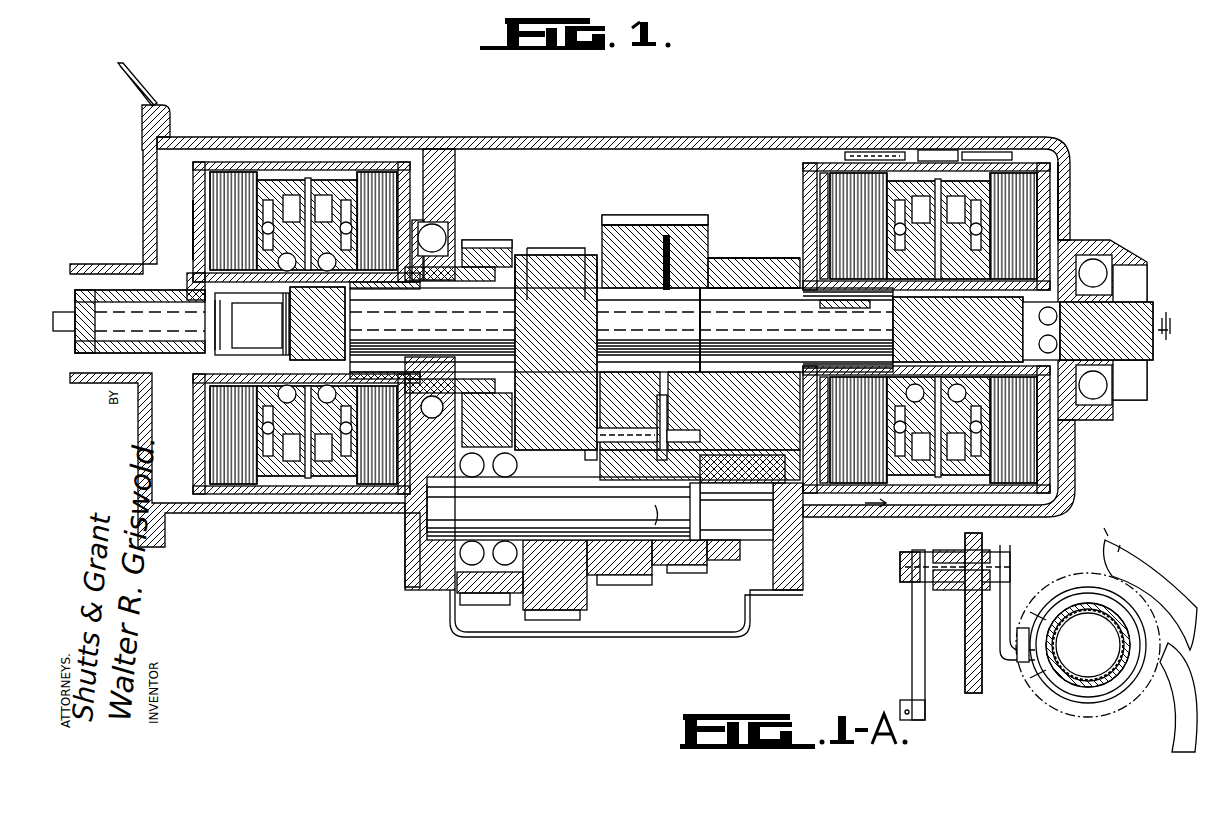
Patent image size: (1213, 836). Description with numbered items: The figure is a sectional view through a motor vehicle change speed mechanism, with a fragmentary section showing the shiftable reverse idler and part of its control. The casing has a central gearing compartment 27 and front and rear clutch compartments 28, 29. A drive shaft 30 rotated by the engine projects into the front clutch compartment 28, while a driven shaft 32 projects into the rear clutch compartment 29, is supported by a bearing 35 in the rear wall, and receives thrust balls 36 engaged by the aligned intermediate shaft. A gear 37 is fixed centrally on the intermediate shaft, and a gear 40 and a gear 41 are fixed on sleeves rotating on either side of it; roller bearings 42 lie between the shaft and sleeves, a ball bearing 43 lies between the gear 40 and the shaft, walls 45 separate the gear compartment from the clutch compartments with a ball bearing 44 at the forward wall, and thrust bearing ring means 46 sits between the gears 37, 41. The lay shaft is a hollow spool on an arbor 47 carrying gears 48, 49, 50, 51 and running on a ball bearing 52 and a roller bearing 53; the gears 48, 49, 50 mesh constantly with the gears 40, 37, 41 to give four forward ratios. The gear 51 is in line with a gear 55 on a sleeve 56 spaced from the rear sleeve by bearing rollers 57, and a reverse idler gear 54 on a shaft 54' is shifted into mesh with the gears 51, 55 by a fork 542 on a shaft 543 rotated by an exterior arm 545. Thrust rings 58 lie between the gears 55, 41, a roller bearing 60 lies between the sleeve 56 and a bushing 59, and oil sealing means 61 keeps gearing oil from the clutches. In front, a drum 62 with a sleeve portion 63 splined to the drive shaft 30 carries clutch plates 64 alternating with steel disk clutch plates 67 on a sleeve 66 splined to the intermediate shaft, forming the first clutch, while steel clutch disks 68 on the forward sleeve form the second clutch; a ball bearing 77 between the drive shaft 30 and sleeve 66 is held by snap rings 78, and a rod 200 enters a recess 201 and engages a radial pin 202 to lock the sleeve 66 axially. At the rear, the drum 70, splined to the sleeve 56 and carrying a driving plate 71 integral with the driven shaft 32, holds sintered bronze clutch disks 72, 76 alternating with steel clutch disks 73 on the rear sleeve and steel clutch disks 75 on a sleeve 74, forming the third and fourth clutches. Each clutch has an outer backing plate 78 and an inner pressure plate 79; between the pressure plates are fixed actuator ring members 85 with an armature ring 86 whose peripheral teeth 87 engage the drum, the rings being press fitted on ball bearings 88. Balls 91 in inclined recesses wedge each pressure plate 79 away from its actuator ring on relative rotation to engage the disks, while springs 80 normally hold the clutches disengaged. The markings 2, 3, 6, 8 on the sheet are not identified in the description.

In FIG. 1, the main shaft 2 is at (766, 330).
In FIG. 1, the direction arrow 3 is at (870, 503).
In FIG. 1, the clutch 6 is at (936, 185).
In FIG. 1, the clutch 8 is at (882, 180).
In FIG. 1, the central gearing compartment 27 is at (745, 148).
In FIG. 1, the front clutch compartment 28 is at (350, 140).
In FIG. 1, the rear clutch compartment 29 is at (888, 150).
In FIG. 1, the drive shaft 30 is at (95, 290).
In FIG. 1, the driven shaft 32 is at (1147, 380).
In FIG. 1, the bearing 35 is at (1080, 433).
In FIG. 1, the thrust balls 36 is at (1078, 338).
In FIG. 1, the gear 37 is at (560, 256).
In FIG. 1, the gear 40 is at (490, 250).
In FIG. 1, the gear 41 is at (635, 228).
In FIG. 1, the roller bearings 42 is at (760, 300).
In FIG. 1, the ball bearing 43 is at (533, 262).
In FIG. 1, the ball bearing 44 is at (458, 245).
In FIG. 1, the walls 45 is at (455, 162).
In FIG. 1, the thrust bearing ring means 46 is at (587, 262).
In FIG. 1, the arbor 47 is at (563, 508).
In FIG. 1, the gear 48 is at (480, 605).
In FIG. 1, the gear 49 is at (558, 620).
In FIG. 1, the gear 50 is at (630, 585).
In FIG. 1, the gear 51 is at (690, 573).
In FIG. 1-A, the gear 51 is at (1170, 735).
In FIG. 1, the ball bearing 52 is at (430, 590).
In FIG. 1, the roller bearing 53 is at (650, 530).
In FIG. 1, the reverse idler gear 54 is at (750, 522).
In FIG. 1-A, the reverse idler gear 54 is at (1082, 660).
In FIG. 1-A, the shaft 54' is at (1051, 663).
In FIG. 1-A, the fork 542 is at (1012, 580).
In FIG. 1-A, the shaft 543 is at (905, 567).
In FIG. 1-A, the arm 545 is at (912, 640).
In FIG. 1, the gear 55 is at (670, 240).
In FIG. 1-A, the gear 55 is at (1148, 560).
In FIG. 1, the sleeve 56 is at (842, 309).
In FIG. 1, the bearing rollers 57 is at (712, 330).
In FIG. 1, the thrust rings 58 is at (666, 235).
In FIG. 1, the bushing 59 is at (732, 260).
In FIG. 1, the roller bearing 60 is at (714, 260).
In FIG. 1, the oil sealing means 61 is at (1070, 250).
In FIG. 1, the drum 62 is at (312, 182).
In FIG. 1, the sleeve portion 63 is at (190, 283).
In FIG. 1, the clutch plates 64 is at (266, 172).
In FIG. 1, the sleeve 66 is at (195, 440).
In FIG. 1, the steel disk clutch plates 67 is at (226, 175).
In FIG. 1, the steel clutch disks 68 is at (385, 175).
In FIG. 1, the rear clutch drum 70 is at (795, 122).
In FIG. 1, the driving plate 71 is at (1070, 190).
In FIG. 1, the sintered bronze clutch disks 72 is at (836, 170).
In FIG. 1, the steel clutch disks 73 is at (878, 336).
In FIG. 1, the sleeve 74 is at (958, 329).
In FIG. 1, the steel clutch disks 75 is at (1024, 331).
In FIG. 1, the sintered bronze clutch disks 76 is at (1036, 170).
In FIG. 1, the ball bearing 77 is at (193, 230).
In FIG. 1, the backing plate 78 is at (193, 200).
In FIG. 1, the pressure plate 79 is at (275, 175).
In FIG. 1, the springs 80 is at (307, 431).
In FIG. 1, the actuator ring members 85 is at (990, 480).
In FIG. 1, the armature ring 86 is at (918, 150).
In FIG. 1, the peripheral teeth 87 is at (976, 152).
In FIG. 1, the ball bearings 88 is at (938, 328).
In FIG. 1, the balls 91 is at (320, 470).
In FIG. 1, the rod 200 is at (60, 310).
In FIG. 1, the recess 201 is at (317, 323).
In FIG. 1, the radial pin 202 is at (302, 327).